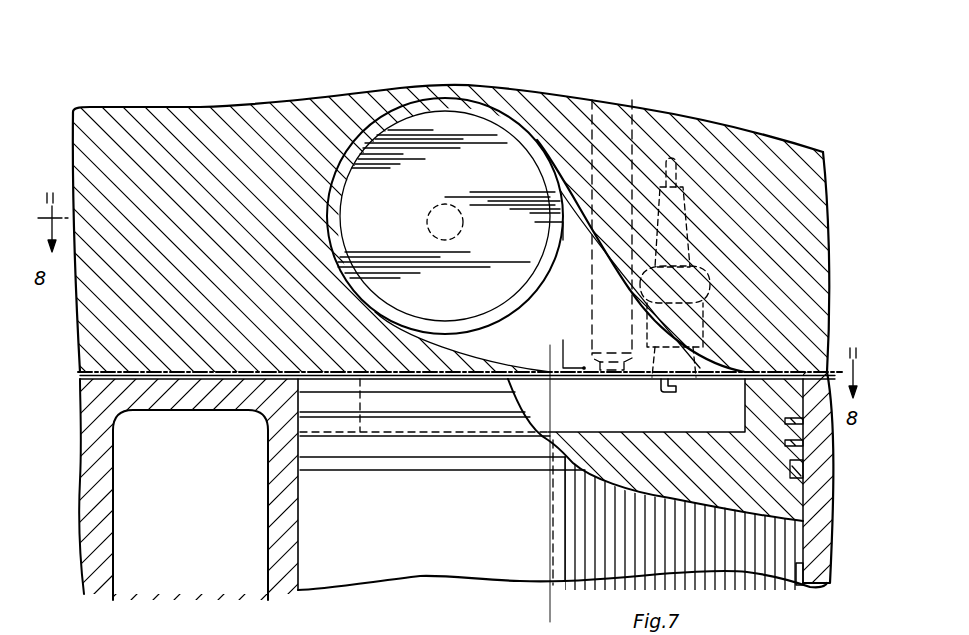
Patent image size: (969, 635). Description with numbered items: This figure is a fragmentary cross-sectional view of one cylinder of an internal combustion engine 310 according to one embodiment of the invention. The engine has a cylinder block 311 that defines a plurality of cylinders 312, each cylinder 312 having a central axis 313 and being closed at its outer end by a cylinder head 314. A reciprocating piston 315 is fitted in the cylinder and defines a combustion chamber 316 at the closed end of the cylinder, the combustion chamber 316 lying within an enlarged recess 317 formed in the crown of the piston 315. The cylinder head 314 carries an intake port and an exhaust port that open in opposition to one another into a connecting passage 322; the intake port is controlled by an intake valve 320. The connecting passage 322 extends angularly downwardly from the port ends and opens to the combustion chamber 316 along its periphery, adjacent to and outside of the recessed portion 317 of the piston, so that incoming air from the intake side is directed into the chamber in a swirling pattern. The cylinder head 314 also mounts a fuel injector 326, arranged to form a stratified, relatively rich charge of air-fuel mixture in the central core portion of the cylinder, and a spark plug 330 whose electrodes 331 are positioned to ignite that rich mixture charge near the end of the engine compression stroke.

The internal combustion engine 310 is at (810, 151).
The cylinder block 311 is at (815, 521).
The cylinder 312 is at (806, 574).
The central axis 313 is at (548, 522).
The cylinder head 314 is at (806, 238).
The piston 315 is at (618, 565).
The combustion chamber 316 is at (738, 370).
The enlarged recess 317 is at (738, 397).
The intake valve 320 is at (469, 125).
The connecting passage 322 is at (596, 250).
The fuel injector 326 is at (632, 115).
The spark plug 330 is at (700, 318).
The electrodes 331 is at (677, 391).